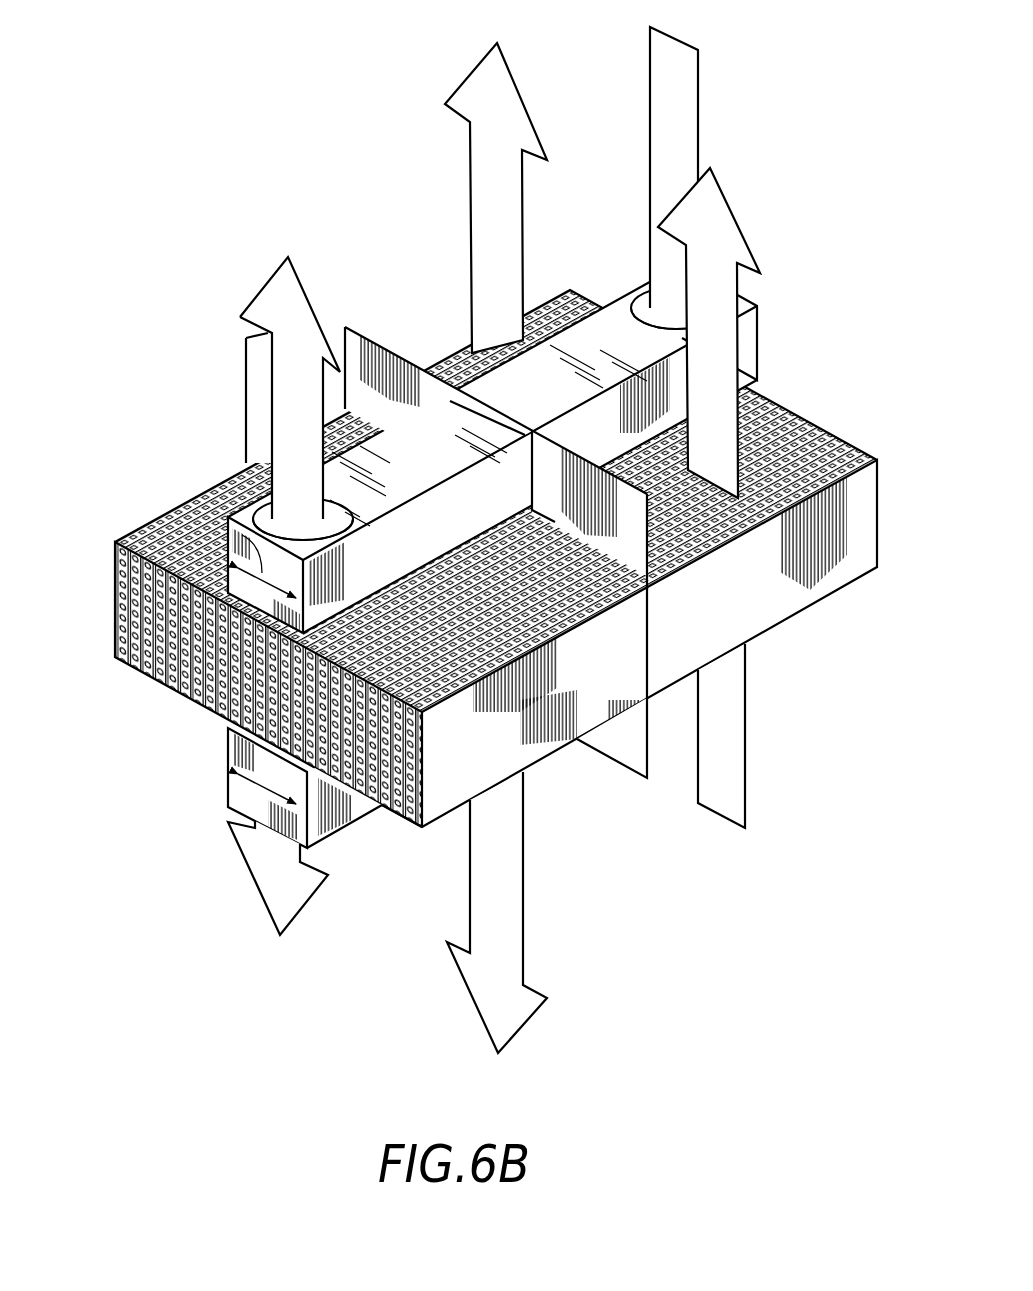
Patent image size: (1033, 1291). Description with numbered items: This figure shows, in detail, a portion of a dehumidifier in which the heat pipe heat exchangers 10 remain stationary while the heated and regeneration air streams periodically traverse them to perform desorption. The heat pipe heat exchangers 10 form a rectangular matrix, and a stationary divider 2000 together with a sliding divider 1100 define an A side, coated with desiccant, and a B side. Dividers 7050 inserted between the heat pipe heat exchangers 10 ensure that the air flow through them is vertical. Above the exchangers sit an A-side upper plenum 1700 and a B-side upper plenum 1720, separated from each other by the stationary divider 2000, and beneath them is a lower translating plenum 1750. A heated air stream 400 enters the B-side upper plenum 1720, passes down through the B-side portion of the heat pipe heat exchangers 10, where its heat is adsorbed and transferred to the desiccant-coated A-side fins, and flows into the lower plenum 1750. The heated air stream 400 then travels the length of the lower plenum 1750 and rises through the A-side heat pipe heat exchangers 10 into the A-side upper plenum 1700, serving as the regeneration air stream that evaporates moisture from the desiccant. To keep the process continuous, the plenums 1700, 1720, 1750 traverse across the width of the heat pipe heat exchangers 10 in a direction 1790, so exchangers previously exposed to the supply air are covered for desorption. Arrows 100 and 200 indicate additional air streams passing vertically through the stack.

The heat pipe heat exchangers 10 is at (112, 558).
The flow direction arrow 100 is at (245, 396).
The flow direction arrow 200 is at (524, 236).
The heated air stream 400 is at (262, 287).
The sliding divider 1100 is at (625, 766).
The A-side upper plenum 1700 is at (437, 467).
The B-side upper plenum 1720 is at (545, 381).
The lower plenum 1750 is at (226, 748).
The direction 1790 is at (210, 500).
The stationary divider 2000 is at (389, 350).
The dividers 7050 is at (405, 826).